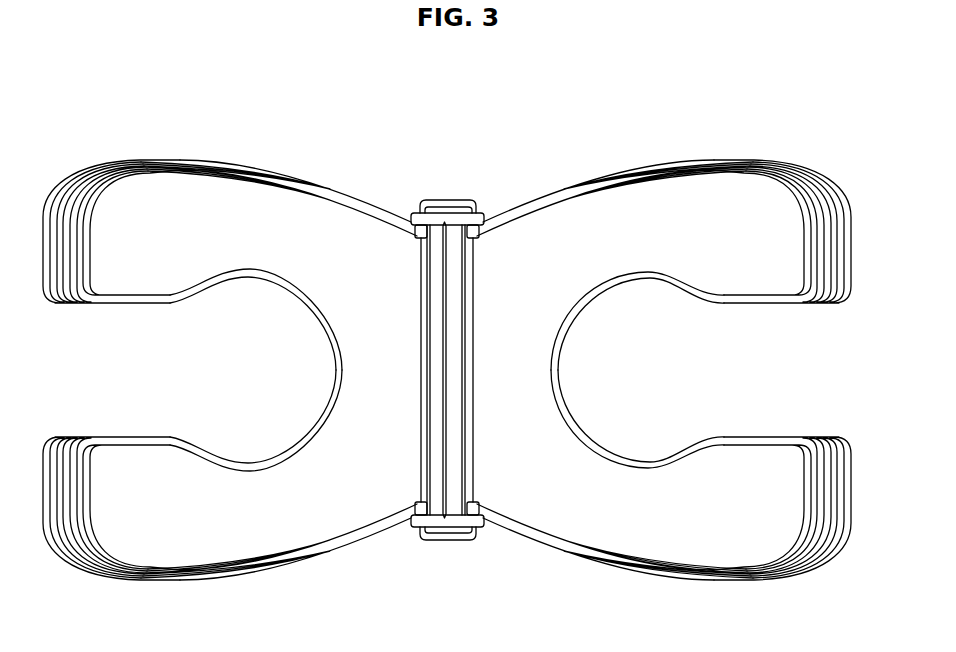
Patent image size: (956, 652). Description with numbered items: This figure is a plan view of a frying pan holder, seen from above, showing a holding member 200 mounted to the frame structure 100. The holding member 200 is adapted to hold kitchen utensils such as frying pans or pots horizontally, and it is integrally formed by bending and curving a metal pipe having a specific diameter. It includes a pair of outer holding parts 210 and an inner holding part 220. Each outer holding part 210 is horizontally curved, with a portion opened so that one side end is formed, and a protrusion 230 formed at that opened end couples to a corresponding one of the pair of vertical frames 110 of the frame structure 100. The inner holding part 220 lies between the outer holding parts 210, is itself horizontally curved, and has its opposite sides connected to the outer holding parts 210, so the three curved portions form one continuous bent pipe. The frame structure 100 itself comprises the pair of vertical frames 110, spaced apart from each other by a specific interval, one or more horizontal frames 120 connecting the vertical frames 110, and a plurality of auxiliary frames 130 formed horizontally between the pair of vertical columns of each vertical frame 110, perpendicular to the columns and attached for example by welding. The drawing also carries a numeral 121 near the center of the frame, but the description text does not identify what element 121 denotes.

The frame structure 100 is at (461, 342).
The vertical frames 110 is at (427, 208).
The horizontal frame 120 is at (425, 469).
The center pin 121 is at (459, 496).
The auxiliary frames 130 is at (483, 530).
The holding member 200 is at (454, 335).
The outer holding parts 210 is at (645, 170).
The inner holding part 220 is at (666, 273).
The protrusion 230 is at (473, 209).